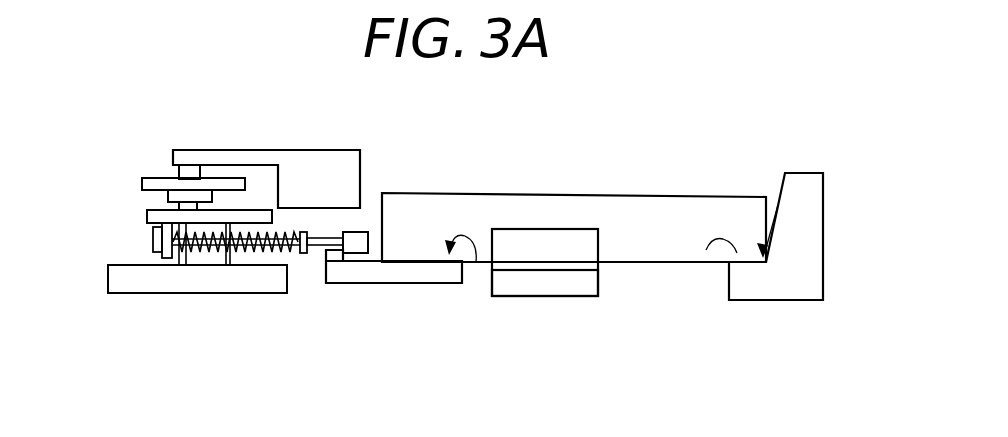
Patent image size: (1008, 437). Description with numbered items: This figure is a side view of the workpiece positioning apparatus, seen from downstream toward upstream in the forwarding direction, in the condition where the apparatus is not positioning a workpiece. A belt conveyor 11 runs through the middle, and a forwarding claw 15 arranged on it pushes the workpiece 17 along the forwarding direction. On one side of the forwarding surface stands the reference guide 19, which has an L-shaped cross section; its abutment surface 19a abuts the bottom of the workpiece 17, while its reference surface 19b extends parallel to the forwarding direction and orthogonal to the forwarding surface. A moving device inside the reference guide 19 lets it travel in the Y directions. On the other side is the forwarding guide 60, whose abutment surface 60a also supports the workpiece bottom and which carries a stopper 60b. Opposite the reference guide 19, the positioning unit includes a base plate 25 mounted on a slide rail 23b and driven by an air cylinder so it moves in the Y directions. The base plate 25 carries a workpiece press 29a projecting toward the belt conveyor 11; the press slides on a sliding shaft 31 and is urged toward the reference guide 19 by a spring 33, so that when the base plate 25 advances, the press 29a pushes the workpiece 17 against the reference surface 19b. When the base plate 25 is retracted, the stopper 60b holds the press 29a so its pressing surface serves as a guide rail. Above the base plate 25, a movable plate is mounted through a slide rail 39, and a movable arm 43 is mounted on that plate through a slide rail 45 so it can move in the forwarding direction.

The belt conveyor 11 is at (580, 290).
The forwarding claw 15 is at (593, 248).
The workpiece 17 is at (428, 206).
The reference guide 19 is at (805, 188).
The abutment surface 19a is at (706, 250).
The reference surface 19b is at (737, 250).
The slide rail 23b is at (153, 288).
The base plate 25 is at (147, 213).
The workpiece press 29a is at (364, 238).
The sliding shaft 31 is at (318, 246).
The spring 33 is at (290, 254).
The slide rail 39 is at (175, 190).
The movable arm 43 is at (322, 173).
The slide rail 45 is at (195, 172).
The forwarding guide 60 is at (422, 277).
The abutment surface 60a is at (470, 250).
The stopper 60b is at (334, 258).